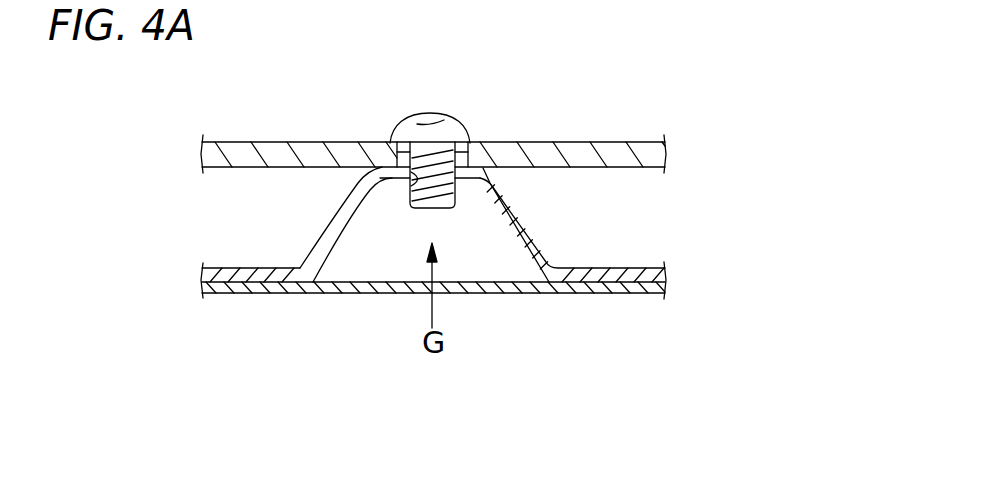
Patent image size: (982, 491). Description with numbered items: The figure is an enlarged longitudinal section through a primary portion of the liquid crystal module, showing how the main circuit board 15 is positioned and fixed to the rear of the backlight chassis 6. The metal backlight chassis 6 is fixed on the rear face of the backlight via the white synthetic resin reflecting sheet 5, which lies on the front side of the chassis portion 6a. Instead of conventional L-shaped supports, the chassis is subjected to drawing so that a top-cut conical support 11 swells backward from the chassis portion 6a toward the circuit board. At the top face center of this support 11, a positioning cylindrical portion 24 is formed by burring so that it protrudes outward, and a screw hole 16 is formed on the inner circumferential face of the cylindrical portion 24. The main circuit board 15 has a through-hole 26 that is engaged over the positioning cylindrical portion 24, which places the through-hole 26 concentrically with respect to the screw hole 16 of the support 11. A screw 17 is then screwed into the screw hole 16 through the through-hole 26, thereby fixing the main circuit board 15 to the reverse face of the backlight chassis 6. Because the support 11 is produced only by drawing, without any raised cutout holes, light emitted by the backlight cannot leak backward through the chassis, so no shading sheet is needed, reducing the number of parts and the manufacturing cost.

The reflecting sheet 5 is at (307, 293).
The backlight chassis 6 is at (572, 225).
The backlight chassis 6a is at (595, 268).
The top-cut conical support 11 is at (325, 232).
The main circuit board 15 is at (273, 150).
The screw hole 16 is at (408, 183).
The screw 17 is at (397, 137).
The positioning cylindrical portion 24 is at (373, 163).
The through-hole 26 is at (495, 143).